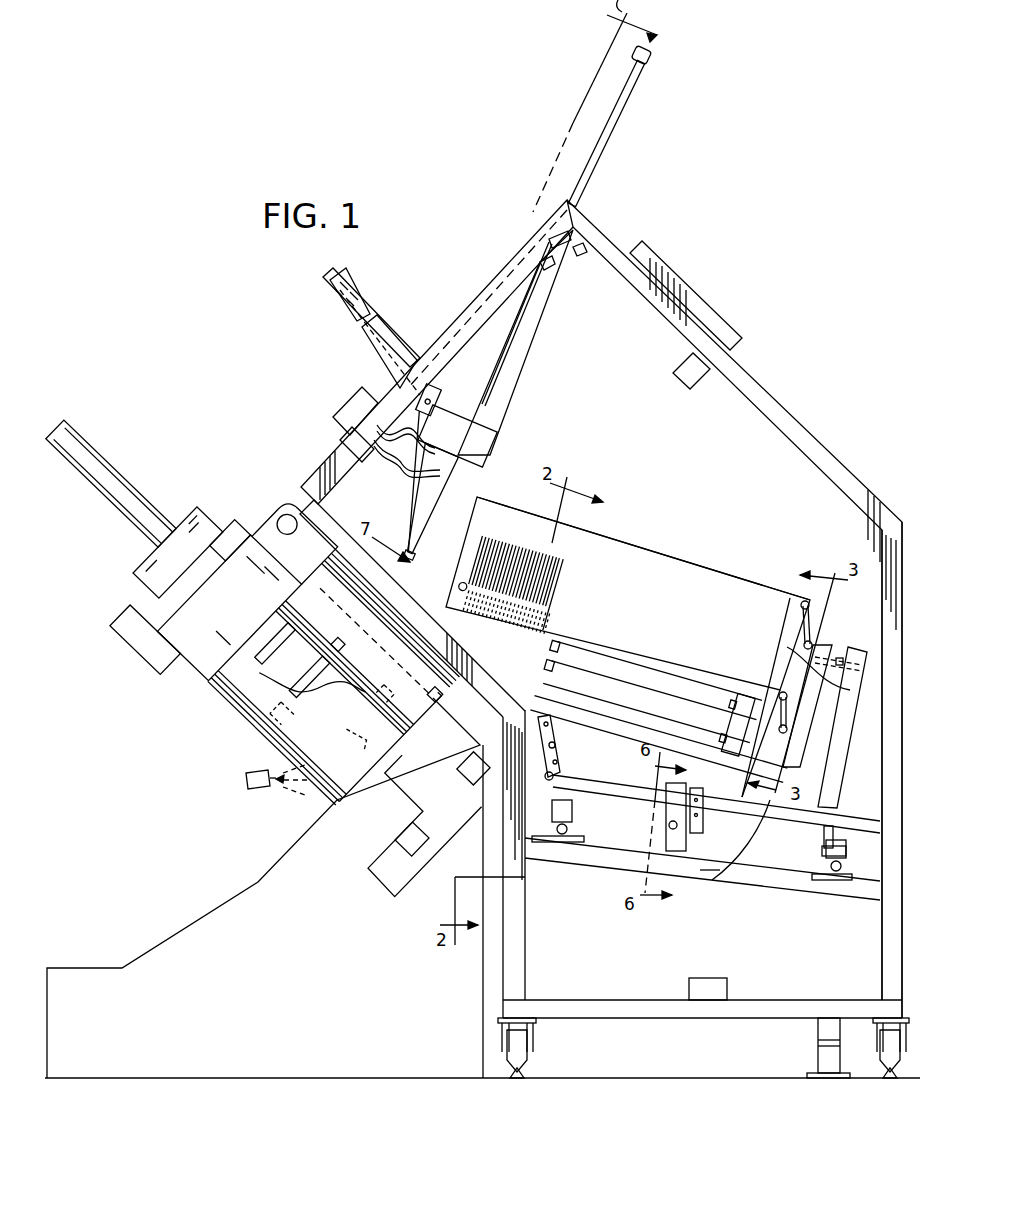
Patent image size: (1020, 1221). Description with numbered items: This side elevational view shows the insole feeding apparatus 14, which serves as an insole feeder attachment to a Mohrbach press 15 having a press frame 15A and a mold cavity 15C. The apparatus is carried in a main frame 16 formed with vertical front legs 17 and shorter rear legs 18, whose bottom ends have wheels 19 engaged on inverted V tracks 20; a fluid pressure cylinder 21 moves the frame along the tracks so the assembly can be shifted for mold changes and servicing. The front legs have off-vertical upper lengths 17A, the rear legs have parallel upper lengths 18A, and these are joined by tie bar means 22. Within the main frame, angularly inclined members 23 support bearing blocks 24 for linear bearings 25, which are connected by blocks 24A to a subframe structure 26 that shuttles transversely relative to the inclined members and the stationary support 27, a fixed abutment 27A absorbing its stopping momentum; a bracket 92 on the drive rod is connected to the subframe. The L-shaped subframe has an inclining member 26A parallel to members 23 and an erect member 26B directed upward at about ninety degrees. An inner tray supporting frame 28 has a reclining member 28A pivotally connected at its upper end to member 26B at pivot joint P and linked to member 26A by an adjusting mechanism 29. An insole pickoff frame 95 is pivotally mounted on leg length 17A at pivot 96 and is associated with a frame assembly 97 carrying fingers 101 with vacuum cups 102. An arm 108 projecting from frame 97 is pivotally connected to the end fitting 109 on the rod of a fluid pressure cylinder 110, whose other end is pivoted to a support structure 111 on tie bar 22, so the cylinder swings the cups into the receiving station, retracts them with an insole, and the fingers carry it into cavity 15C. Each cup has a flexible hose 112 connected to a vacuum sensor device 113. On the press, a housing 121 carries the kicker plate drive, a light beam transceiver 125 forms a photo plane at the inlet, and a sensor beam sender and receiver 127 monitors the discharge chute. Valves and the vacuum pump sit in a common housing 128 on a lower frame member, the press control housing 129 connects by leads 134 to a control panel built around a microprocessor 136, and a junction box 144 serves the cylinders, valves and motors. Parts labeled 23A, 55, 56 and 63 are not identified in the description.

The insole feeding apparatus 14 is at (660, 534).
The Mohrbach press 15 is at (205, 722).
The press frame 15A is at (242, 1012).
The mold cavity 15C is at (330, 722).
The main frame 16 is at (783, 398).
The vertical front legs 17 is at (888, 958).
The upper length of front legs 17A is at (834, 470).
The rear vertical legs 18 is at (520, 980).
The upper lengths of rear legs 18A is at (318, 472).
The wheels 19 is at (526, 1066).
The inverted V tracks 20 is at (514, 1082).
The fluid pressure cylinder 21 is at (818, 1040).
The tie bar means 22 is at (460, 322).
The angularly inclined members 23 is at (608, 870).
The beam portion 23A is at (704, 874).
The bearing blocks 24 is at (580, 840).
The support blocks 24A is at (836, 830).
The linear bearings 25 is at (556, 848).
The subframe structure 26 is at (846, 814).
The inclining member of subframe 26A is at (750, 870).
The erect member of subframe 26B is at (790, 648).
The stationary support 27 is at (698, 850).
The fixed abutment 27A is at (655, 750).
The inner tray supporting frame 28 is at (814, 716).
The reclining member of tray frame 28A is at (608, 740).
The adjusting mechanism 29 is at (556, 738).
The link 55 is at (800, 622).
The link 56 is at (775, 700).
The plate 63 is at (704, 572).
The bracket 92 is at (704, 800).
The insole pickoff frame 95 is at (566, 320).
The pivot 96 is at (583, 268).
The frame assembly 97 is at (528, 350).
The fingers 101 is at (436, 500).
The vacuum cups 102 is at (424, 553).
The arm 108 is at (485, 424).
The end fitting 109 is at (430, 404).
The fluid pressure cylinder 110 is at (364, 358).
The support structure 111 is at (344, 292).
The flexible hose 112 is at (392, 452).
The vacuum sensor device 113 is at (336, 420).
The housing 121 is at (470, 764).
The light beam transceiver 125 is at (286, 600).
The sensor beam sender and receiver 127 is at (244, 790).
The common housing 128 is at (712, 980).
The control housing 129 is at (130, 644).
The leads 134 is at (682, 381).
The microprocessor 136 is at (466, 655).
The junction box 144 is at (662, 266).
The pivot joint P is at (843, 654).